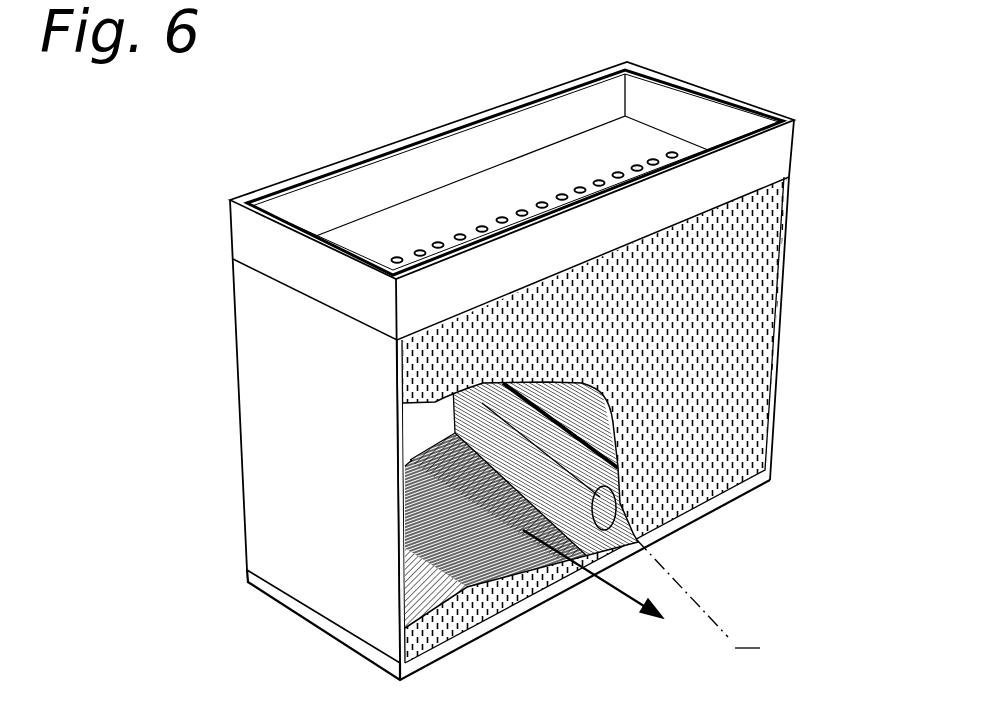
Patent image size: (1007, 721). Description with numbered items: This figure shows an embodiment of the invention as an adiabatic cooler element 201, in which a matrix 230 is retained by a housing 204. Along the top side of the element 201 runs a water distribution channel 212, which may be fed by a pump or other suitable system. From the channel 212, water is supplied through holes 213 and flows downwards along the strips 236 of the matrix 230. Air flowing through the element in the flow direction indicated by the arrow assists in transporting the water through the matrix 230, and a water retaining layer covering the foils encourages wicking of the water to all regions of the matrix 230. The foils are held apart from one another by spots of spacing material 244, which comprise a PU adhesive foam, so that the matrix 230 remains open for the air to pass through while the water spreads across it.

The adiabatic cooler element 201 is at (238, 172).
The housing 204 is at (276, 543).
The water distribution channel 212 is at (422, 210).
The holes 213 is at (600, 183).
The matrix 230 is at (752, 432).
The strips 236 is at (503, 573).
The spacing material 244 is at (515, 449).